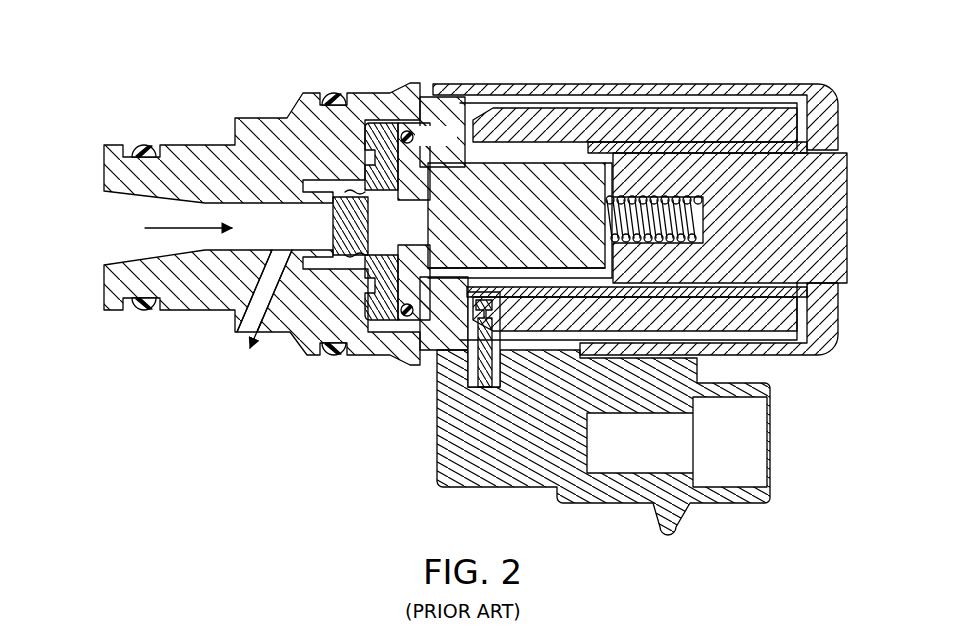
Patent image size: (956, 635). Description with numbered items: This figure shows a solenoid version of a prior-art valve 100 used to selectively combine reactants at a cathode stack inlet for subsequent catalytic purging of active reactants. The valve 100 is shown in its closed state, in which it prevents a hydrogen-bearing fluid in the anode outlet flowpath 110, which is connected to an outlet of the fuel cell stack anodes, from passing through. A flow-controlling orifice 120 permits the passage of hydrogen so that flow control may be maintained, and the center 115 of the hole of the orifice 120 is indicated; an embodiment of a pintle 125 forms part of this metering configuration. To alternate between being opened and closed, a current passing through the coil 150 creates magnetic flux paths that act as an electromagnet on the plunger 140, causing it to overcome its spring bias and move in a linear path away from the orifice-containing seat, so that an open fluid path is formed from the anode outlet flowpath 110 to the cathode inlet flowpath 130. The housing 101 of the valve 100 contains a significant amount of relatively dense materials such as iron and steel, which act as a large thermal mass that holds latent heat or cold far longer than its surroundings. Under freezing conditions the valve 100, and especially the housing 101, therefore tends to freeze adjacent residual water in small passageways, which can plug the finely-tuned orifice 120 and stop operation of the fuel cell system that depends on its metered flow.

The valve 100 is at (230, 100).
The housing 101 is at (385, 351).
The anode outlet flowpath 110 is at (104, 222).
The center of a hole of the orifice 115 is at (336, 226).
The flow-controlling orifice 120 is at (337, 205).
The pintle 125 is at (350, 254).
The cathode inlet flowpath 130 is at (262, 284).
The plunger 140 is at (447, 170).
The coil 150 is at (622, 108).